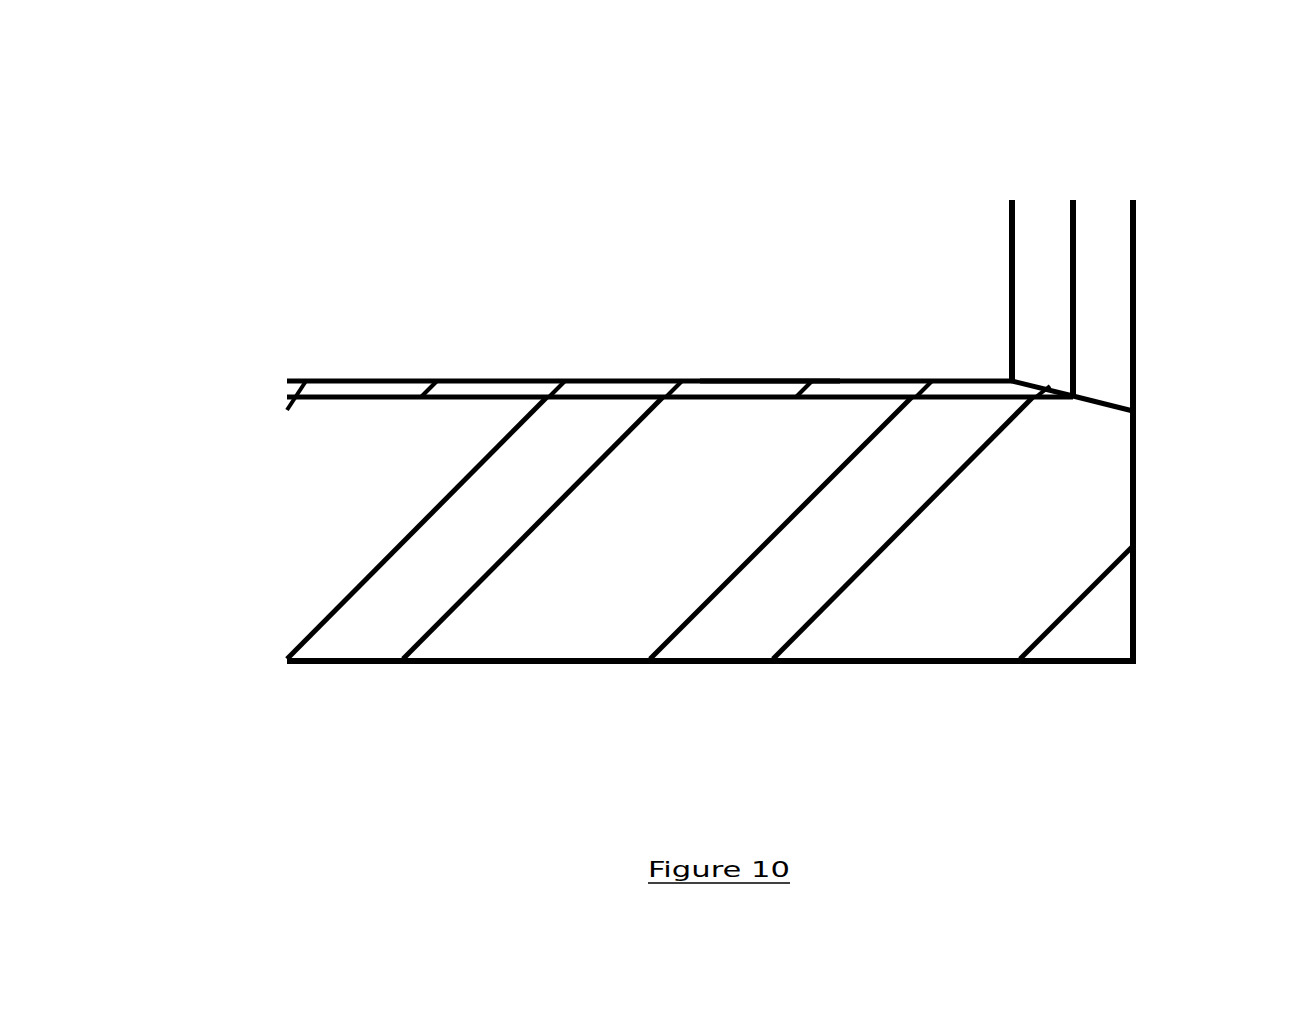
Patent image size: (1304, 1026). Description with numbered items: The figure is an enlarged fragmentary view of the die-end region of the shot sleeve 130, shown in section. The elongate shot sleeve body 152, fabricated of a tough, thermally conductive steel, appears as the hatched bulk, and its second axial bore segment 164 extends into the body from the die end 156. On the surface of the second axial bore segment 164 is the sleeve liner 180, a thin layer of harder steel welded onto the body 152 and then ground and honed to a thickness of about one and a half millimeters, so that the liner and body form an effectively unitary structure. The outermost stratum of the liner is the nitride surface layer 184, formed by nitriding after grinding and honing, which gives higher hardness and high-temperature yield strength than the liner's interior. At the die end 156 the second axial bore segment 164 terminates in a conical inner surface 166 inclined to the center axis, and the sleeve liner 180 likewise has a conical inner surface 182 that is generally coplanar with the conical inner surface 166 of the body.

The shot sleeve 130 is at (1120, 76).
The shot sleeve body 152 is at (520, 637).
The die end 156 is at (1197, 550).
The second axial bore segment 164 is at (340, 404).
The conical inner surface 166 is at (1102, 394).
The sleeve liner 180 is at (496, 388).
The conical inner surface 182 is at (1041, 382).
The nitride surface layer 184 is at (767, 377).